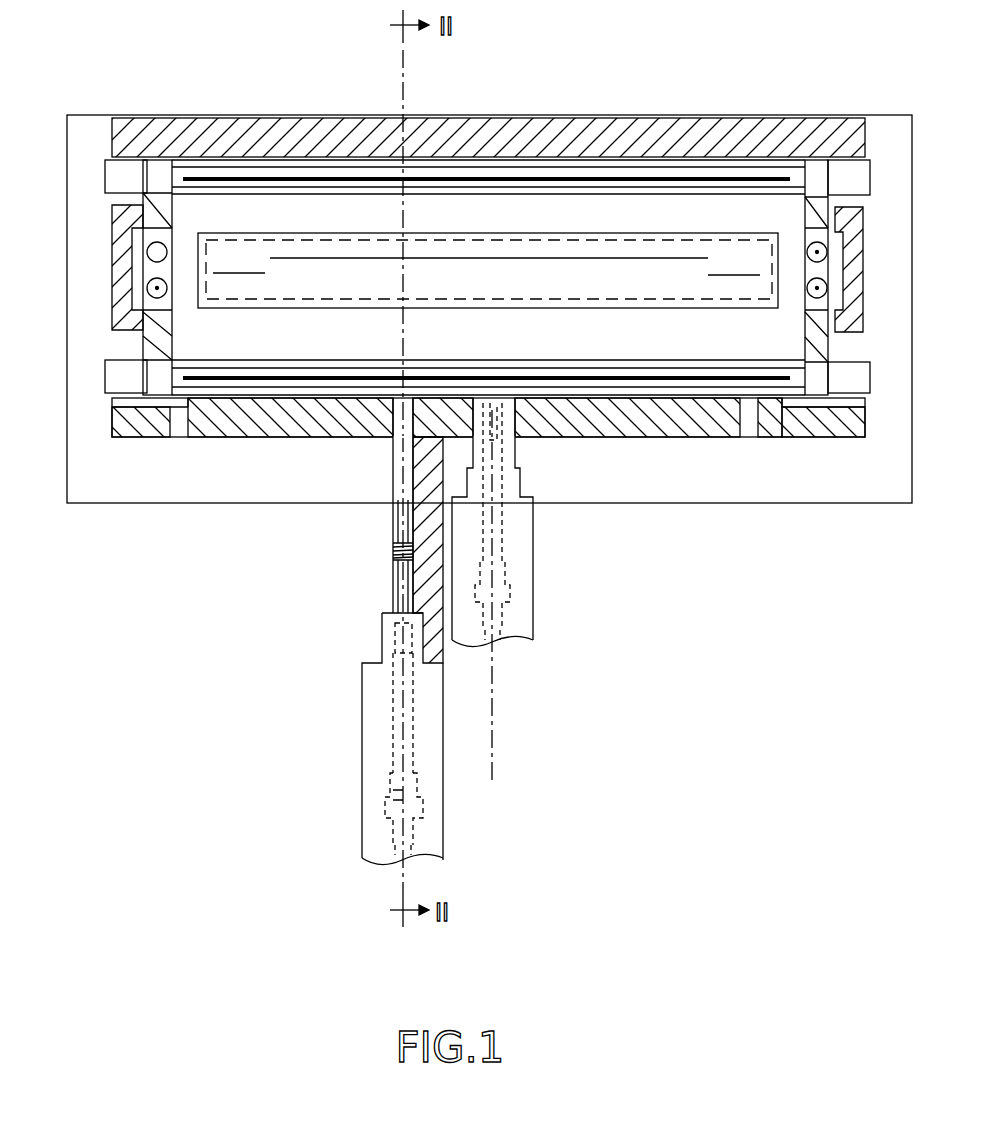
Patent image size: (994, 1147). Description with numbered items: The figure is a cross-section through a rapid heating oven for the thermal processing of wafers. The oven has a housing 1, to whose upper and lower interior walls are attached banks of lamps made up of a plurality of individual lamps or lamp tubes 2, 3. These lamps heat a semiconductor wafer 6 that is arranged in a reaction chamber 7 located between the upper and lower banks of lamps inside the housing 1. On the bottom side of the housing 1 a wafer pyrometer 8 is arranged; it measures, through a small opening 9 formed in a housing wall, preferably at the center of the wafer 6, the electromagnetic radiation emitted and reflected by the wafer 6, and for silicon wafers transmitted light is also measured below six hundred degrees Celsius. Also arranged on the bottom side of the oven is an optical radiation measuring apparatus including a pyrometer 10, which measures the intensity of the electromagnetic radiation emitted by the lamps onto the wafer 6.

The housing 1 is at (203, 425).
The individual lamp tubes 2 is at (147, 176).
The individual lamp tubes 3 is at (147, 373).
The semiconductor wafer 6 is at (282, 258).
The reaction chamber 7 is at (738, 290).
The wafer pyrometer 8 is at (518, 590).
The small opening 9 is at (492, 403).
The pyrometer 10 is at (362, 790).